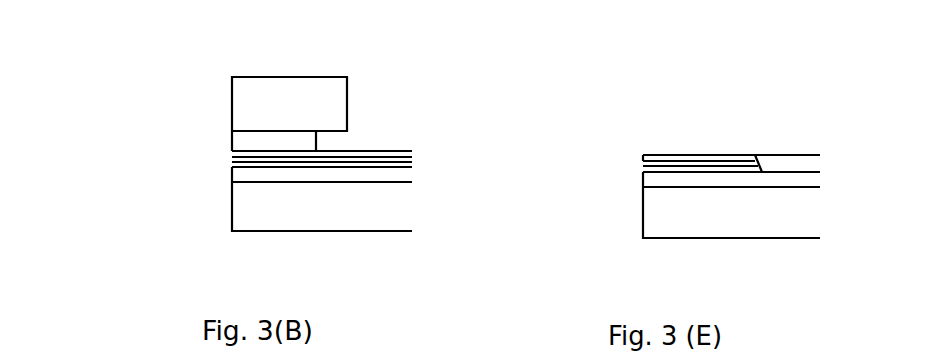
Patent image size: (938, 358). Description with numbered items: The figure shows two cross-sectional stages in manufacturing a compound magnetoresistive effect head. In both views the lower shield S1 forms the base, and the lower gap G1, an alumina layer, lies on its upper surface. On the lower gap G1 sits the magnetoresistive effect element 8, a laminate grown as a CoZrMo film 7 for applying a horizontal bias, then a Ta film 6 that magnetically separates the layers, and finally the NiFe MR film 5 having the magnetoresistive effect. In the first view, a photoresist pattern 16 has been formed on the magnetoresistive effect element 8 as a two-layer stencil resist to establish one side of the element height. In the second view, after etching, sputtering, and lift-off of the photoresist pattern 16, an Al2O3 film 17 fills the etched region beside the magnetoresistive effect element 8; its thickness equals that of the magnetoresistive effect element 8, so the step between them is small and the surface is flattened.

In FIG. 3B, the NiFe film 5 is at (232, 152).
In FIG. 3E, the NiFe film 5 is at (643, 155).
In FIG. 3B, the Ta film 6 is at (232, 157).
In FIG. 3E, the Ta film 6 is at (643, 161).
In FIG. 3B, the CoZrMo film 7 is at (232, 163).
In FIG. 3E, the CoZrMo film 7 is at (643, 167).
In FIG. 3B, the magnetoresistive effect element 8 is at (222, 157).
In FIG. 3E, the magnetoresistive effect element 8 is at (632, 162).
In FIG. 3B, the photoresist pattern 16 is at (347, 97).
In FIG. 3E, the Al2O3 film 17 is at (778, 155).
In FIG. 3B, the lower gap G1 is at (287, 176).
In FIG. 3E, the lower gap G1 is at (695, 181).
In FIG. 3B, the lower shield S1 is at (372, 218).
In FIG. 3E, the lower shield S1 is at (783, 225).